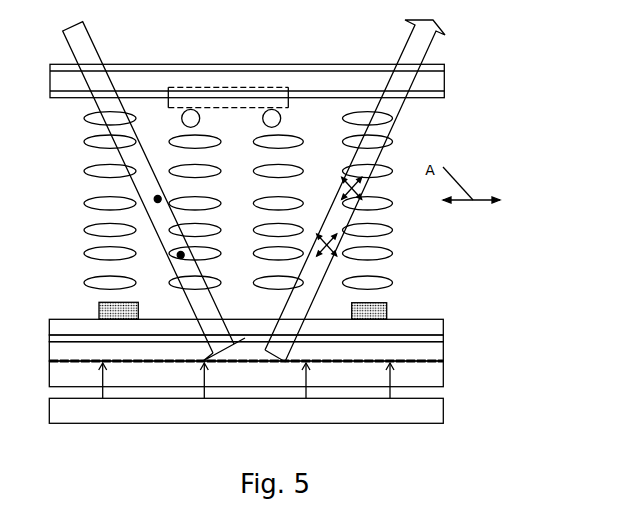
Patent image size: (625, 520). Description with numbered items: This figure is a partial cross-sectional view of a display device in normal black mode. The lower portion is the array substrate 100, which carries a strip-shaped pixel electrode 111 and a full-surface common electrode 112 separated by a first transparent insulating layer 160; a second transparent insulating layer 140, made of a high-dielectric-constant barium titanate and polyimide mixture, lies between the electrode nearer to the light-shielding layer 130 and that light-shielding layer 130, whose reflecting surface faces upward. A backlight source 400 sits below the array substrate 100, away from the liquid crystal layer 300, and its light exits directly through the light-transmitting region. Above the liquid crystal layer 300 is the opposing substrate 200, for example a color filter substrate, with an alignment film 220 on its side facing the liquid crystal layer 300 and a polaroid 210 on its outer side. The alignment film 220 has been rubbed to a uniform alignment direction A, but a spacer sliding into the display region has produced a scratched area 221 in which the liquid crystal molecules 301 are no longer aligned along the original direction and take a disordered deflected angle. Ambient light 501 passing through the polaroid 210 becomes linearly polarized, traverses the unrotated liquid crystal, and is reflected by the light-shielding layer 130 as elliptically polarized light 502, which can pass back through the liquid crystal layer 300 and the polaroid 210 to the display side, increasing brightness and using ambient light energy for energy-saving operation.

The display panel / light guide substrate 100 is at (430, 377).
The pixel electrode 111 is at (385, 312).
The common electrode 112 is at (433, 338).
The light-shielding layer 130 is at (437, 361).
The second transparent insulating layer 140 is at (427, 350).
The first transparent insulating layer 160 is at (433, 325).
The opposing substrate 200 is at (423, 81).
The polaroid 210 is at (425, 68).
The alignment film 220 is at (423, 93).
The scratched area 221 is at (242, 87).
The liquid crystal layer 300 is at (413, 252).
The liquid crystal molecules 301 is at (268, 116).
The backlight source 400 is at (427, 413).
The ambient light 501 is at (95, 57).
The elliptically polarized light 502 is at (418, 45).